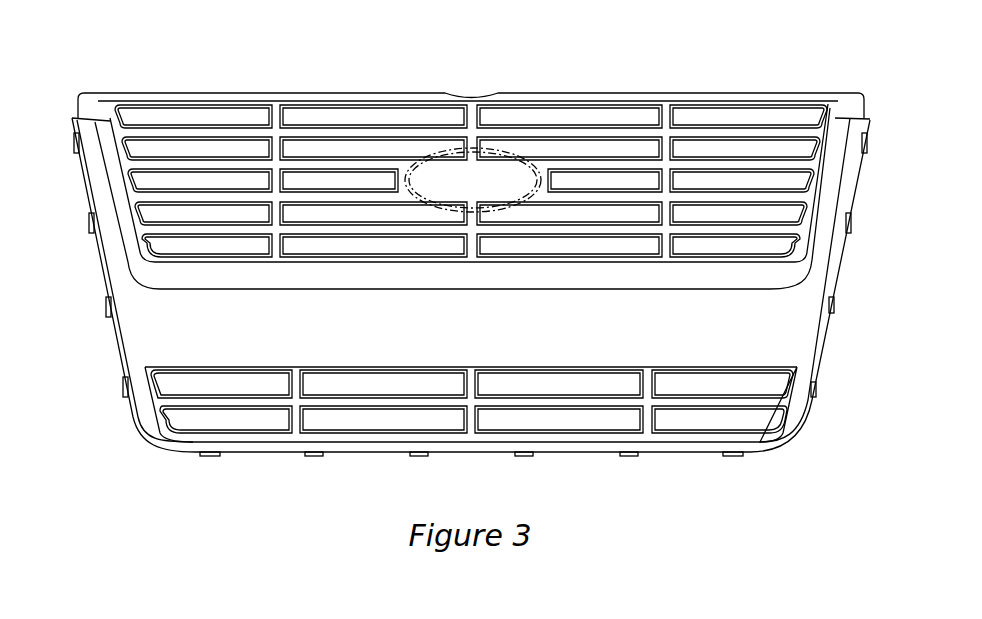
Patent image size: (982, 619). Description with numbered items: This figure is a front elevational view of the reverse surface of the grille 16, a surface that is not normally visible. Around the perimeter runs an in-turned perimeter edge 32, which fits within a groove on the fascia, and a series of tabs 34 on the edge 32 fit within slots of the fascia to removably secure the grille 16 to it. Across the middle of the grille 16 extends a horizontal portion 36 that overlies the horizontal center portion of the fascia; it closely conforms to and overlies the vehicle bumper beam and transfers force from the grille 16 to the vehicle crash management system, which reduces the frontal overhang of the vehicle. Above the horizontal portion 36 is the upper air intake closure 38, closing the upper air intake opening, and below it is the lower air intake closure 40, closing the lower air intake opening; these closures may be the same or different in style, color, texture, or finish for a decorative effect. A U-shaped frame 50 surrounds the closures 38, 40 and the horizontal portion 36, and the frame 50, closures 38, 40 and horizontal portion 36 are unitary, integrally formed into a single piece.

The grille 16 is at (845, 182).
The in-turned perimeter edge 32 is at (838, 263).
The tabs 34 is at (110, 303).
The horizontal portion 36 is at (463, 336).
The upper air intake closure 38 is at (234, 101).
The lower air intake closure 40 is at (593, 400).
The U-shaped frame 50 is at (133, 332).